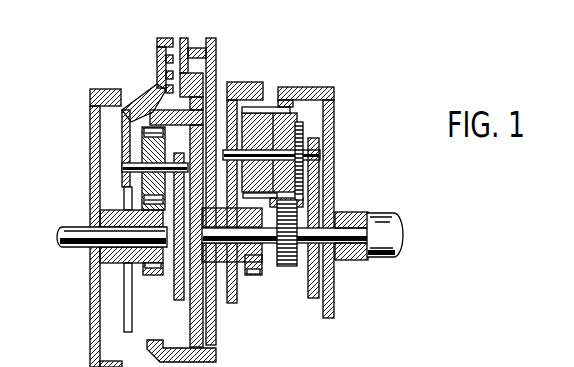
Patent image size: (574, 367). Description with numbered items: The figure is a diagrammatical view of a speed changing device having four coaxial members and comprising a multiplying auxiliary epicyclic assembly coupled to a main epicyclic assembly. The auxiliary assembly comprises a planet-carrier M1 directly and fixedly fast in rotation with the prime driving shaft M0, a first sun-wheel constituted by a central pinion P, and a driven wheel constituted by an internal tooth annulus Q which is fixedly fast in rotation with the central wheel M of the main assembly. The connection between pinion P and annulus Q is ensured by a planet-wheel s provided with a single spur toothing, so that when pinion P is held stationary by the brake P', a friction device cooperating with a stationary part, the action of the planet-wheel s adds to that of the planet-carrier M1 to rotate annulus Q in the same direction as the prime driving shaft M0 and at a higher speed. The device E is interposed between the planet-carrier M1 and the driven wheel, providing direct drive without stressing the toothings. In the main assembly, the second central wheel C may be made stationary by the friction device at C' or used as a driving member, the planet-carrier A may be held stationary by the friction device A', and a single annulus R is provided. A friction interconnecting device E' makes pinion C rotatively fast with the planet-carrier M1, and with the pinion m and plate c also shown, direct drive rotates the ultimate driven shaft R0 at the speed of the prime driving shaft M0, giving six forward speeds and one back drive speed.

The brake P' is at (101, 210).
The friction interconnecting device E' is at (147, 37).
The device E is at (149, 70).
The friction device C' is at (199, 181).
The friction device A' is at (245, 180).
The clutch plate c is at (263, 107).
The annulus R is at (334, 97).
The pinion m is at (304, 135).
The planet-wheel s is at (150, 147).
The prime driving shaft M0 is at (58, 232).
The central pinion P is at (153, 284).
The planet-carrier M1 is at (180, 300).
The internal tooth annulus Q is at (150, 344).
The second central wheel C is at (253, 280).
The central wheel M is at (289, 268).
The planet-carrier A is at (307, 238).
The ultimate driven shaft R0 is at (376, 212).